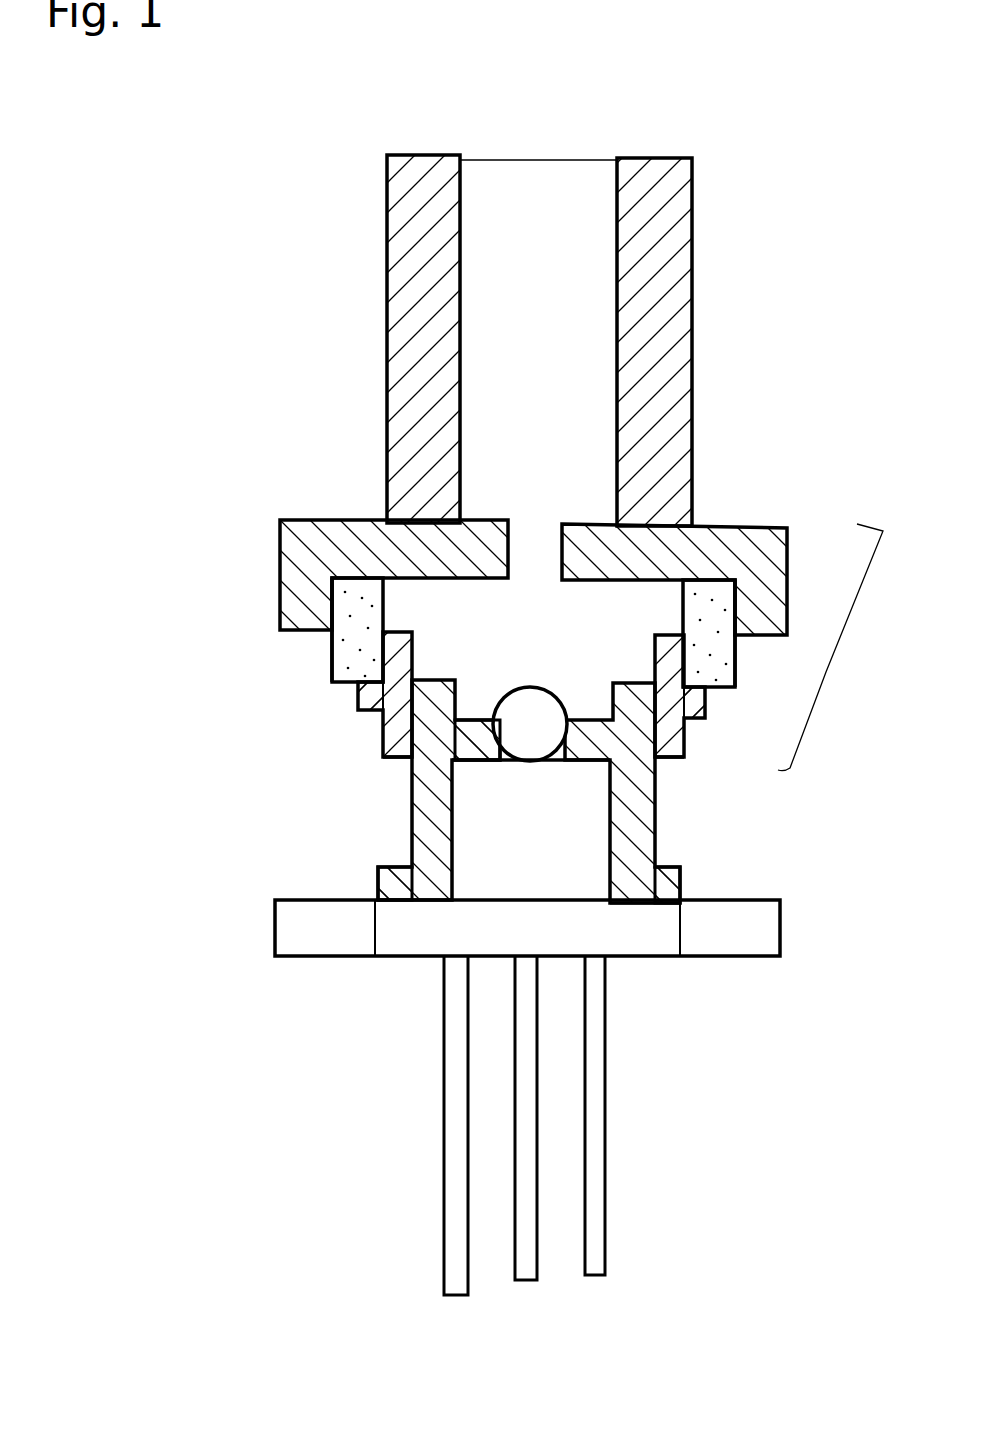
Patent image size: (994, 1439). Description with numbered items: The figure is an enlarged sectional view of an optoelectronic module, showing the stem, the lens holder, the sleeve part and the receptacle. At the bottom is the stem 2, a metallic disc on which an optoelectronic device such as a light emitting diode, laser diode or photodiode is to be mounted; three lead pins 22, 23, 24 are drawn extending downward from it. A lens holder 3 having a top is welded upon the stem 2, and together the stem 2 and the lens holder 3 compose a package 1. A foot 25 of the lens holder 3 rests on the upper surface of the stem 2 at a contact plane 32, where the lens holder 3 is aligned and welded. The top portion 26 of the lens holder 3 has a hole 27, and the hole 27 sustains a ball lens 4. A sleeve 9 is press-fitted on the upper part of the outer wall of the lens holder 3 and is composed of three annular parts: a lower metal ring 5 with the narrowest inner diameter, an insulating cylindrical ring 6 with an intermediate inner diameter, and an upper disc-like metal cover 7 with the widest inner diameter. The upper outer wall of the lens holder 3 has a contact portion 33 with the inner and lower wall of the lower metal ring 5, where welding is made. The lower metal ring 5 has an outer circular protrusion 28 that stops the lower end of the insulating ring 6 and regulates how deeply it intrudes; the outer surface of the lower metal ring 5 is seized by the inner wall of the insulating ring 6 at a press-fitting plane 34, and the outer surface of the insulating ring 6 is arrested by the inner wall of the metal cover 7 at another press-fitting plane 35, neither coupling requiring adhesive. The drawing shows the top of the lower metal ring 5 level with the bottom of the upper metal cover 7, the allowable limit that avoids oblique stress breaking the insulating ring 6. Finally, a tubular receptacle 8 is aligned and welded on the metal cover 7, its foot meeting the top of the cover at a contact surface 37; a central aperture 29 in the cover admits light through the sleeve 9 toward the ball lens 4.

The package 1 is at (727, 989).
The stem 2 is at (408, 927).
The lens holder 3 is at (423, 819).
The ball lens 4 is at (540, 720).
The lower metal ring 5 is at (383, 721).
The insulating cylindrical ring 6 is at (348, 635).
The upper metal cover 7 is at (315, 553).
The receptacle 8 is at (447, 305).
The sleeve 9 is at (830, 647).
The lead pin 22 is at (452, 1270).
The lead pin 23 is at (522, 1248).
The lead pin 24 is at (592, 1232).
The foot 25 is at (393, 893).
The top portion 26 is at (485, 740).
The hole 27 is at (558, 760).
The outer circular protrusion 28 is at (357, 708).
The cap aperture 29 is at (516, 565).
The contact plane 32 is at (647, 900).
The contact portion 33 is at (383, 753).
The press-fitting plane 34 is at (360, 688).
The press-fitting plane 35 is at (332, 608).
The contact surface 37 is at (410, 523).